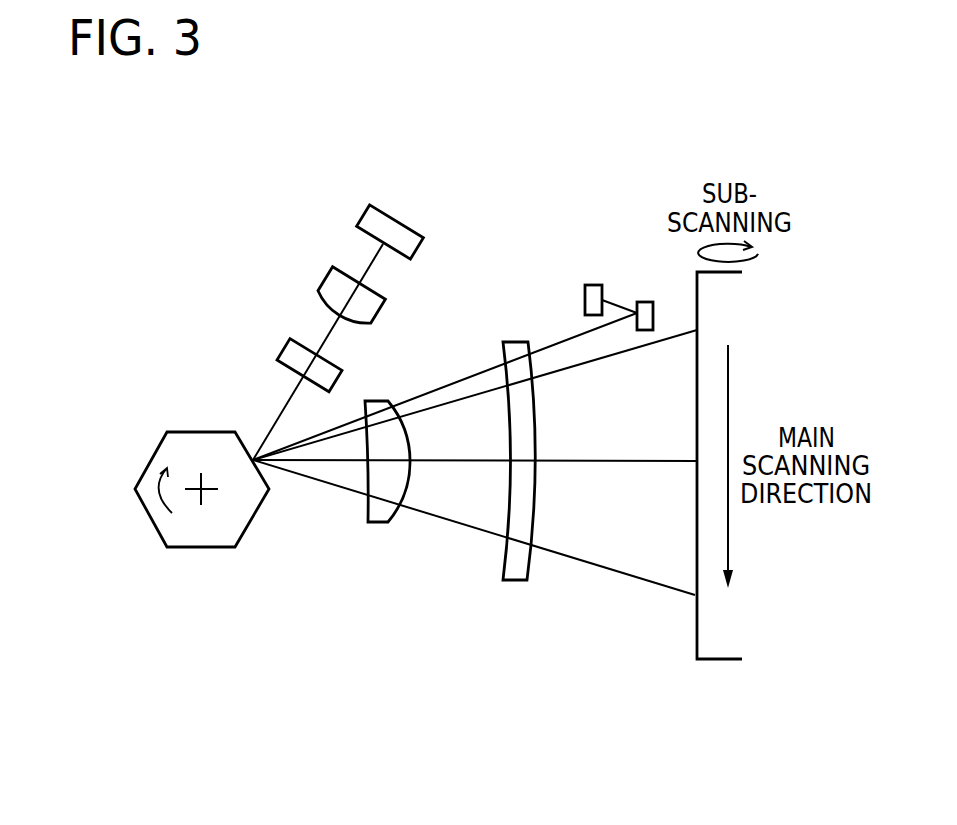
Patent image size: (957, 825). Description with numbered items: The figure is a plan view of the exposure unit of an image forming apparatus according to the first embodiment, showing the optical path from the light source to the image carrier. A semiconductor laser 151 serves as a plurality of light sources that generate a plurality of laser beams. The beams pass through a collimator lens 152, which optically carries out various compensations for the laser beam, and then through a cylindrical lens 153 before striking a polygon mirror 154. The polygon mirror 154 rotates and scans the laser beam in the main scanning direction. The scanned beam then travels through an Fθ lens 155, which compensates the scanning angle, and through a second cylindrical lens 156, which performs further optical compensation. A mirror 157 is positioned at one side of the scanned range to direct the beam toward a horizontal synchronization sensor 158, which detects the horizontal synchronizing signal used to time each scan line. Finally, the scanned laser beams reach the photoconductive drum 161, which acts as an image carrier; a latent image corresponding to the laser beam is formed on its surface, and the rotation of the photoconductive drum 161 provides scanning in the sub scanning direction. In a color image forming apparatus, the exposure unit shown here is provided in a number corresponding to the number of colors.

The semiconductor laser 151 is at (366, 212).
The collimator lens 152 is at (333, 275).
The cylindrical lens 153 is at (290, 345).
The polygon mirror 154 is at (179, 432).
The Fθ lens 155 is at (377, 523).
The cylindrical lens 156 is at (514, 582).
The mirror 157 is at (643, 305).
The horizontal synchronization sensor 158 is at (583, 300).
The photoconductive drum 161 is at (715, 662).